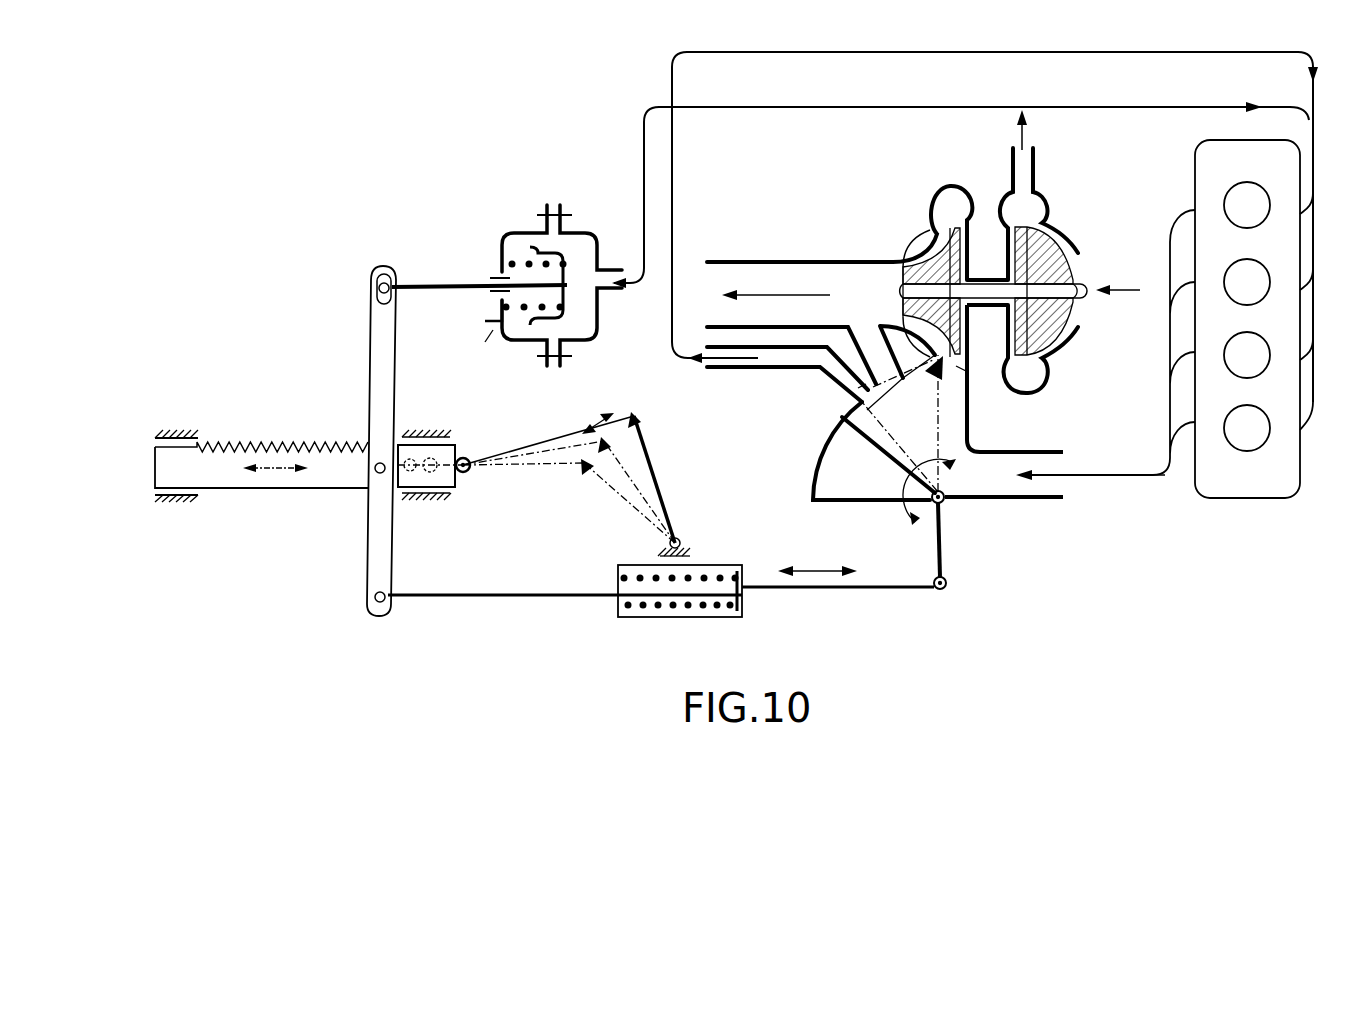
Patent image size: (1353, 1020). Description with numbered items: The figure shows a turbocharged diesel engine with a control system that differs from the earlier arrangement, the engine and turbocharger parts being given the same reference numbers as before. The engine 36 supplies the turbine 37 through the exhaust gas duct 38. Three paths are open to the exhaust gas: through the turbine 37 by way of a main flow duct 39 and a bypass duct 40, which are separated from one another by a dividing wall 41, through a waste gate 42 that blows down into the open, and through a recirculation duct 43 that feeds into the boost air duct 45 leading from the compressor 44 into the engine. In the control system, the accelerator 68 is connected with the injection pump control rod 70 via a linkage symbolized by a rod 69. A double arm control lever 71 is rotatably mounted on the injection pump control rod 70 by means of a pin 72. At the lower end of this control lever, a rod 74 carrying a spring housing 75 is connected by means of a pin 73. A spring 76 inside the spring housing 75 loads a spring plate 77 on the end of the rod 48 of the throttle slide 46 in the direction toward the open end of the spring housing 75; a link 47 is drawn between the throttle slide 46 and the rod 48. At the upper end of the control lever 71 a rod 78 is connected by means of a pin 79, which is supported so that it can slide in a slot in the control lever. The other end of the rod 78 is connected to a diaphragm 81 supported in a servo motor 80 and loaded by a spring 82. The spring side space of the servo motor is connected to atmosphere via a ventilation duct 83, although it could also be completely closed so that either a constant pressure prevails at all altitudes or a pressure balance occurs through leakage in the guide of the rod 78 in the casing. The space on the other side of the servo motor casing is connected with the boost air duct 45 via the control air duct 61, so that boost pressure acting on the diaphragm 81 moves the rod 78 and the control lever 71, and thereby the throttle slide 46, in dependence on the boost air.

The engine 36 is at (1210, 185).
The turbine 37 is at (928, 246).
The exhaust gas duct 38 is at (1005, 492).
The main flow duct 39 is at (941, 366).
The bypass duct 40 is at (858, 388).
The dividing wall 41 is at (956, 366).
The waste gate 42 is at (872, 345).
The recirculation duct 43 is at (1283, 45).
The compressor 44 is at (1060, 244).
The boost air duct 45 is at (1172, 98).
The throttle slide 46 is at (870, 492).
The connecting link 47 is at (943, 548).
The rod 48 is at (825, 591).
The control air duct 61 is at (790, 101).
The accelerator 68 is at (672, 520).
The rod 69 is at (567, 441).
The injection pump control rod 70 is at (257, 450).
The double arm control lever 71 is at (377, 357).
The pin 72 is at (376, 480).
The pin 73 is at (376, 599).
The rod 74 is at (498, 598).
The spring housing 75 is at (668, 618).
The spring 76 is at (718, 607).
The spring plate 77 is at (735, 590).
The rod 78 is at (441, 284).
The pin 79 is at (379, 288).
The servo motor 80 is at (520, 232).
The diaphragm 81 is at (566, 302).
The spring 82 is at (508, 262).
The ventilation duct 83 is at (490, 321).